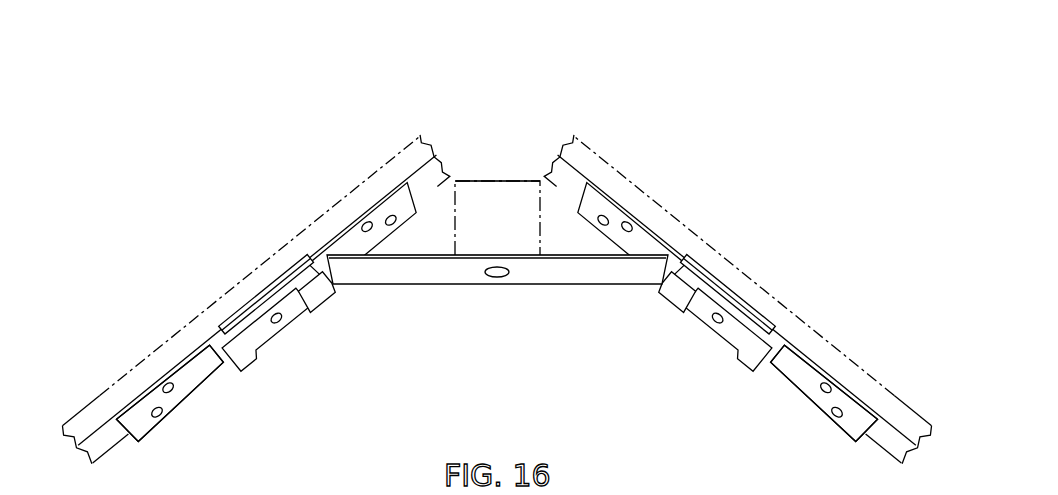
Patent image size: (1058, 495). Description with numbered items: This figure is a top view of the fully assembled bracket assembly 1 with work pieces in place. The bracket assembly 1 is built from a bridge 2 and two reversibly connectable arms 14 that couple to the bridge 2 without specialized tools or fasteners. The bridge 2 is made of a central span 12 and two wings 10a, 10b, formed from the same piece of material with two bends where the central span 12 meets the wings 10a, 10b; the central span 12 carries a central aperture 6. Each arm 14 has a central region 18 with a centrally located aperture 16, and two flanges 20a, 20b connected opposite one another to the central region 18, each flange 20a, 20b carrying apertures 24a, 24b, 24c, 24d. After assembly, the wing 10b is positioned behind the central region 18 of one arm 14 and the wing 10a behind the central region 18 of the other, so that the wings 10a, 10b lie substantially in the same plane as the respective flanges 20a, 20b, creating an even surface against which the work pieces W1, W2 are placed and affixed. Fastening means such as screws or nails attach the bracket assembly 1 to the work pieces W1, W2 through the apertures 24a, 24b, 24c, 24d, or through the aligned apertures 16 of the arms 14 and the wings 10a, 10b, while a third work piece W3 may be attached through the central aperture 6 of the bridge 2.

The bracket assembly 1 is at (549, 85).
The bridge 2 is at (462, 285).
The central aperture 6 is at (497, 279).
The central span 12 is at (560, 279).
The arm 14 is at (196, 389).
The aperture 16 is at (278, 326).
The central region 18 is at (300, 322).
The wing 10a is at (726, 290).
The wing 10b is at (268, 290).
The flange 20a is at (383, 202).
The flange 20b is at (146, 428).
The aperture 24a is at (393, 227).
The aperture 24b is at (362, 222).
The aperture 24c is at (165, 383).
The aperture 24d is at (161, 418).
The work piece W1 is at (410, 146).
The work piece W2 is at (588, 150).
The third work piece W3 is at (497, 183).